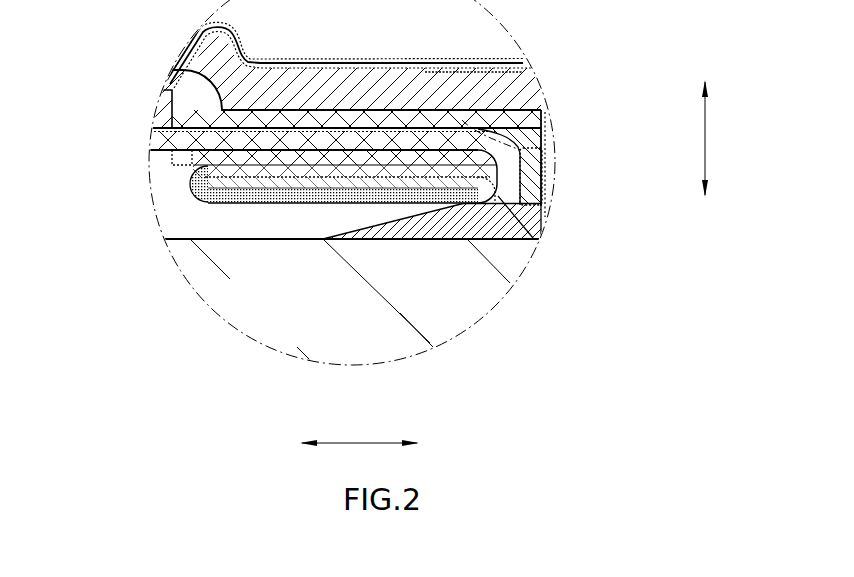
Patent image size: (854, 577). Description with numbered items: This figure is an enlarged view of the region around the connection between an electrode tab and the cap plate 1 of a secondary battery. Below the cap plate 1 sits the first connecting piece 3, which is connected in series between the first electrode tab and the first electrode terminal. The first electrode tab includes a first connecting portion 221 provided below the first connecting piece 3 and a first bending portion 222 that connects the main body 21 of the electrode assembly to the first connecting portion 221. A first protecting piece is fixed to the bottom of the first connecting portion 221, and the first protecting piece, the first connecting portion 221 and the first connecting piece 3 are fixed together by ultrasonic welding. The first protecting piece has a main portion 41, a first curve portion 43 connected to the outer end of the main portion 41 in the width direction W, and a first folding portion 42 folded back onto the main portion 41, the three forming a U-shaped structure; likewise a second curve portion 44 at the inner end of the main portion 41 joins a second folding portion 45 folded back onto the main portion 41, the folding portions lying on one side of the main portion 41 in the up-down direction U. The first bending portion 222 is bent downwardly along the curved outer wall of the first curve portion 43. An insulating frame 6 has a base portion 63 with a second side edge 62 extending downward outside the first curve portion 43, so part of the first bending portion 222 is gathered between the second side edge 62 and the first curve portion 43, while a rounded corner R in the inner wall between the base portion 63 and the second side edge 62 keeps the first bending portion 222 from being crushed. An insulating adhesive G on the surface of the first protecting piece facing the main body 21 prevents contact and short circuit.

The cap plate 1 is at (366, 83).
The first connecting piece 3 is at (157, 150).
The insulating frame 6 is at (380, 114).
The second side edge 62 is at (543, 147).
The base portion 63 is at (472, 116).
The main body 21 is at (450, 327).
The first connecting portion 221 is at (170, 167).
The first bending portion 222 is at (500, 201).
The main portion 41 is at (297, 178).
The first folding portion 42 is at (381, 166).
The first curve portion 43 is at (475, 178).
The second curve portion 44 is at (202, 203).
The second folding portion 45 is at (243, 166).
The insulating adhesive G is at (193, 200).
The rounded corner R is at (462, 120).
The up-down direction U is at (715, 138).
The width direction W is at (359, 427).